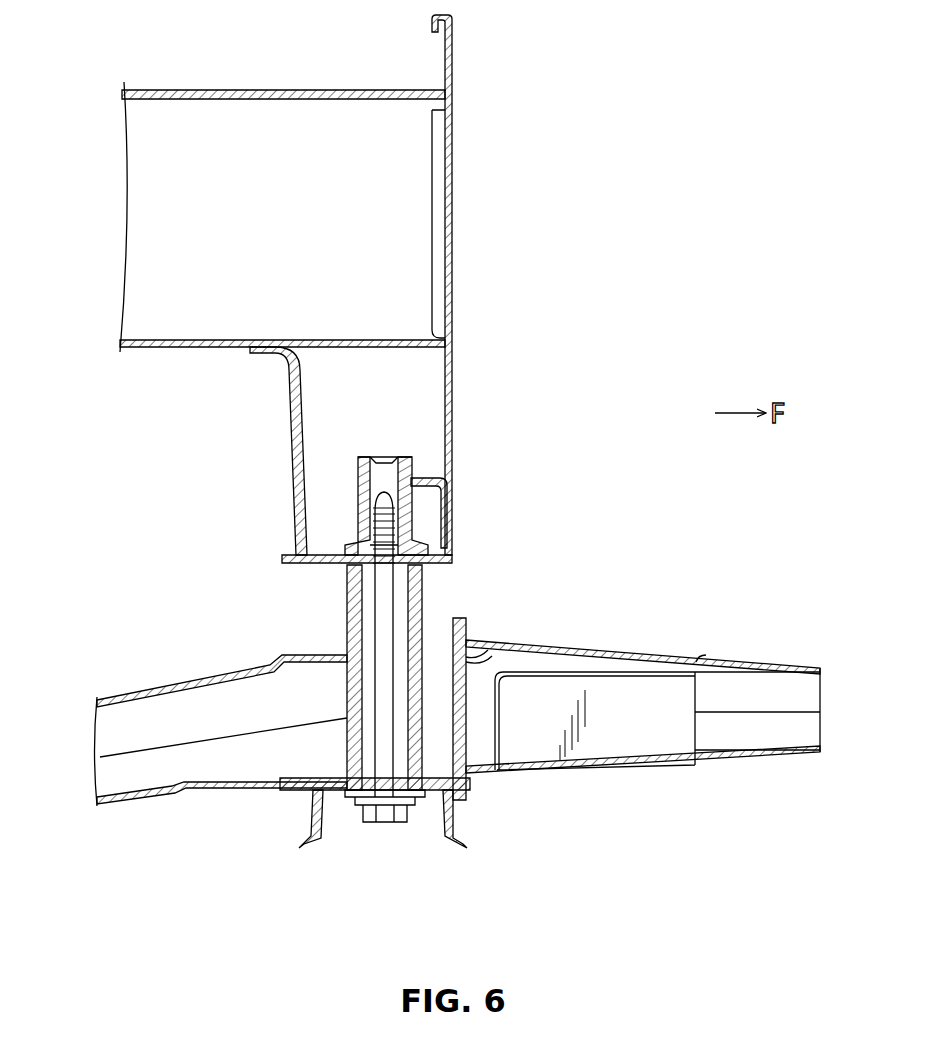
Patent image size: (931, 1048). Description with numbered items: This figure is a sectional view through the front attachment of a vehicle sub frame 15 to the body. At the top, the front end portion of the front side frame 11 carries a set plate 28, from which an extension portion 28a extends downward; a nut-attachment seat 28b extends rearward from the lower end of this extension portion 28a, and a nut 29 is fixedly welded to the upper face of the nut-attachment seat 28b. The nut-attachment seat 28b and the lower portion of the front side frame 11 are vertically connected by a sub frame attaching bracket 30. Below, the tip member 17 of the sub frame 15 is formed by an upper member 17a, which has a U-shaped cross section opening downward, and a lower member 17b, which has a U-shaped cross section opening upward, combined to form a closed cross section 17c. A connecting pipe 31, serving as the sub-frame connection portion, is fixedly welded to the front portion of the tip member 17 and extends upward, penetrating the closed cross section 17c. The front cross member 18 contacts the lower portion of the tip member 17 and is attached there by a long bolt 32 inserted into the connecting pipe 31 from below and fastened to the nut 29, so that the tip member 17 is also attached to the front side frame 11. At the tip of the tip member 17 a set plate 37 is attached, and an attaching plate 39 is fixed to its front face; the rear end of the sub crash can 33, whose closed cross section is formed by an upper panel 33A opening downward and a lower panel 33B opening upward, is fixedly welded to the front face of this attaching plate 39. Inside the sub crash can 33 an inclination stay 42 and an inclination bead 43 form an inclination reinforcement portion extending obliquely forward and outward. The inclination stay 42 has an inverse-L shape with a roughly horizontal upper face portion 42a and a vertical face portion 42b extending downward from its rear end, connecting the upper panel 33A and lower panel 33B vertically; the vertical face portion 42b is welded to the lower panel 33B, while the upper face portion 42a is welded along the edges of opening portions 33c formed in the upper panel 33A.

The front side frame 11 is at (285, 89).
The set plate 28 is at (398, 321).
The extension portion 28a is at (453, 525).
The nut-attachment seat 28b is at (335, 568).
The sub frame attaching bracket 30 is at (290, 412).
The nut 29 is at (358, 512).
The long bolt 32 is at (383, 822).
The connecting pipe 31 is at (347, 686).
The set plate 37 is at (455, 620).
The tip member 17 is at (181, 734).
The upper member 17a is at (133, 697).
The lower member 17b is at (200, 790).
The closed cross section 17c is at (134, 770).
The sub frame 15 is at (134, 799).
The front cross member 18 is at (306, 812).
The sub crash can 33 is at (661, 674).
The upper panel 33A is at (797, 661).
The lower panel 33B is at (750, 758).
The opening portions 33c is at (566, 658).
The attaching plate 39 is at (486, 651).
The inclination bead 43 is at (705, 658).
The inclination stay 42 is at (702, 697).
The upper face portion 42a is at (634, 668).
The vertical face portion 42b is at (500, 752).